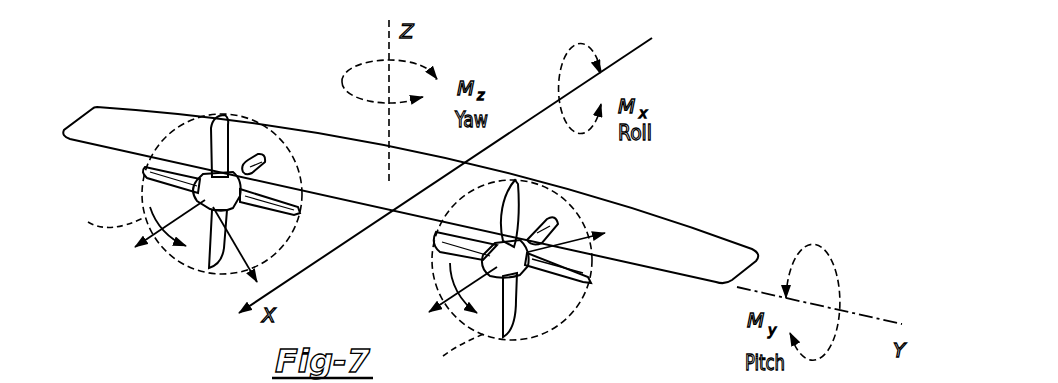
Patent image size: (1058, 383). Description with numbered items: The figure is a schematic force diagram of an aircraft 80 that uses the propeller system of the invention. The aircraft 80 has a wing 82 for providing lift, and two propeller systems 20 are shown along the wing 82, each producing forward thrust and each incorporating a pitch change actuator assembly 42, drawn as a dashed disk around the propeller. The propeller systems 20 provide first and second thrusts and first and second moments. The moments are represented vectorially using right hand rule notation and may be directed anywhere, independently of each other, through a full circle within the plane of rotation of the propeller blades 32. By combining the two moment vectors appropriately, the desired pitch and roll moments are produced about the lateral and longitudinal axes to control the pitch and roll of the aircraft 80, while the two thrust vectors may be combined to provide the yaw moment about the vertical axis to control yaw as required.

The propeller system 20 is at (356, 235).
The propeller blade 32 is at (285, 220).
The pitch change actuator assembly 42 is at (287, 150).
The aircraft 80 is at (722, 73).
The wing 82 is at (668, 230).